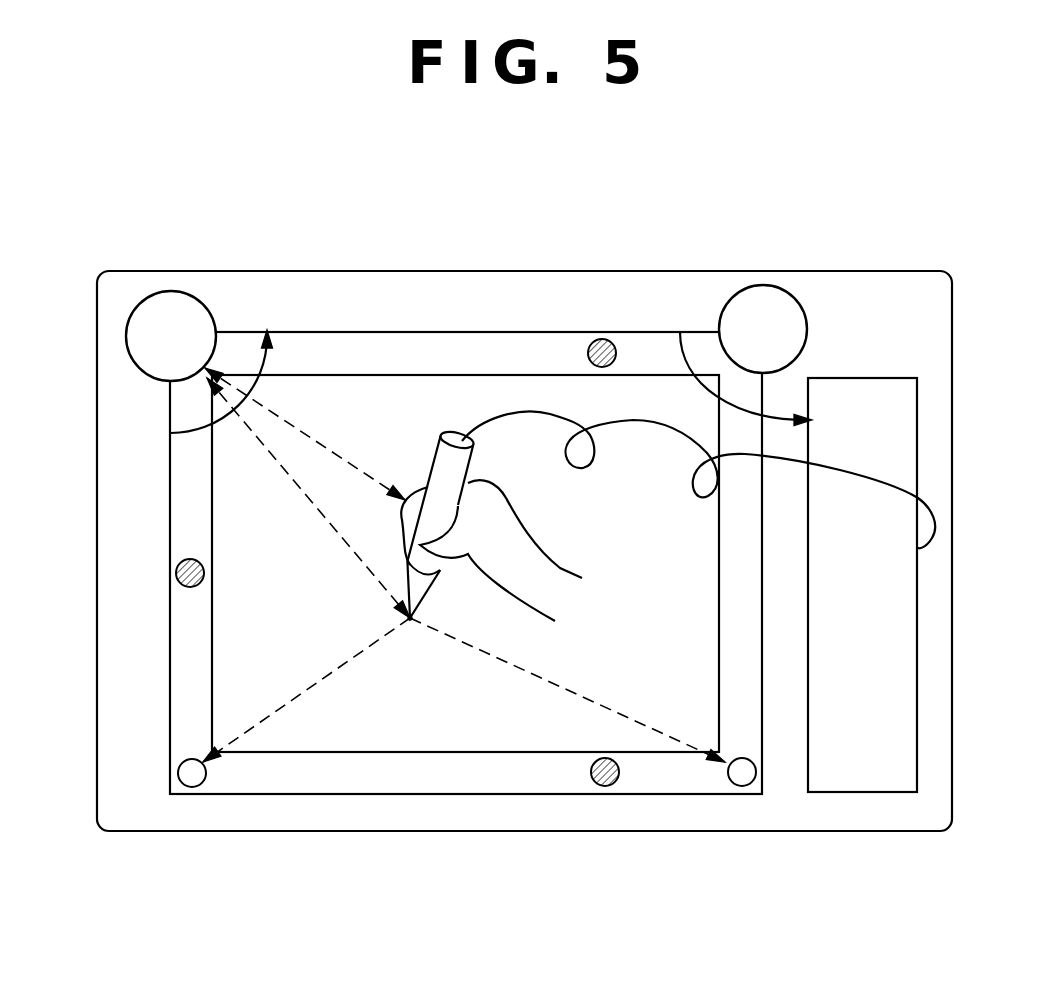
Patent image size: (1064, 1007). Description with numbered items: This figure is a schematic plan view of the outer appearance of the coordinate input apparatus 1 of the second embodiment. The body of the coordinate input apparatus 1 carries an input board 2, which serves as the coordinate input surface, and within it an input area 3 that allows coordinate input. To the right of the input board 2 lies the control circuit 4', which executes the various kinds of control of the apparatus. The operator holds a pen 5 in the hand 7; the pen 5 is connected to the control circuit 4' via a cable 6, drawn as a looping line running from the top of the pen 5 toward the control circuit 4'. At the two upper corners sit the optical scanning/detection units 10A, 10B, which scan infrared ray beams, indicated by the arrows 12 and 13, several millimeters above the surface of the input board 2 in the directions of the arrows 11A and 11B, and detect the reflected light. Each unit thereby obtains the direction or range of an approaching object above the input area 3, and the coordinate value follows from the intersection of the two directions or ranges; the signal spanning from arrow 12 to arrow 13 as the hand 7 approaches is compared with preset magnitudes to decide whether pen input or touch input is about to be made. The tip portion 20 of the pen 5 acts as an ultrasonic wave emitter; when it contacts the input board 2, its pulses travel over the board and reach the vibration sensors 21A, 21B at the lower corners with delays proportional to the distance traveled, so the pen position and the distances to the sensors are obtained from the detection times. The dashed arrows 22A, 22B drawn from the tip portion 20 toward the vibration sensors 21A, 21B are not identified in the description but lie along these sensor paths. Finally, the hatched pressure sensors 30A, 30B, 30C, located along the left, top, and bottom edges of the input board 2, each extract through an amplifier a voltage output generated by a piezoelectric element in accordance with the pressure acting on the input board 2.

The coordinate input apparatus 1 is at (940, 347).
The input board 2 is at (452, 815).
The input area 3 is at (527, 745).
The control circuit 4' is at (930, 585).
The pen 5 is at (448, 483).
The cable 6 is at (918, 500).
The hand 7 is at (503, 523).
The optical scanning/detection unit 10A is at (178, 303).
The optical scanning/detection unit 10B is at (773, 297).
The scanning direction arrow 11A is at (268, 360).
The scanning direction arrow 11B is at (692, 337).
The infrared ray beam arrow 12 is at (300, 487).
The infrared ray beam arrow 13 is at (310, 438).
The tip portion 20 is at (400, 625).
The vibration sensor 21A is at (192, 786).
The vibration sensor 21B is at (743, 786).
The distance to first corner sensor 22A is at (237, 740).
The distance to second corner sensor 22B is at (652, 730).
The pressure sensor 30A is at (176, 577).
The pressure sensor 30B is at (603, 340).
The pressure sensor 30C is at (605, 786).